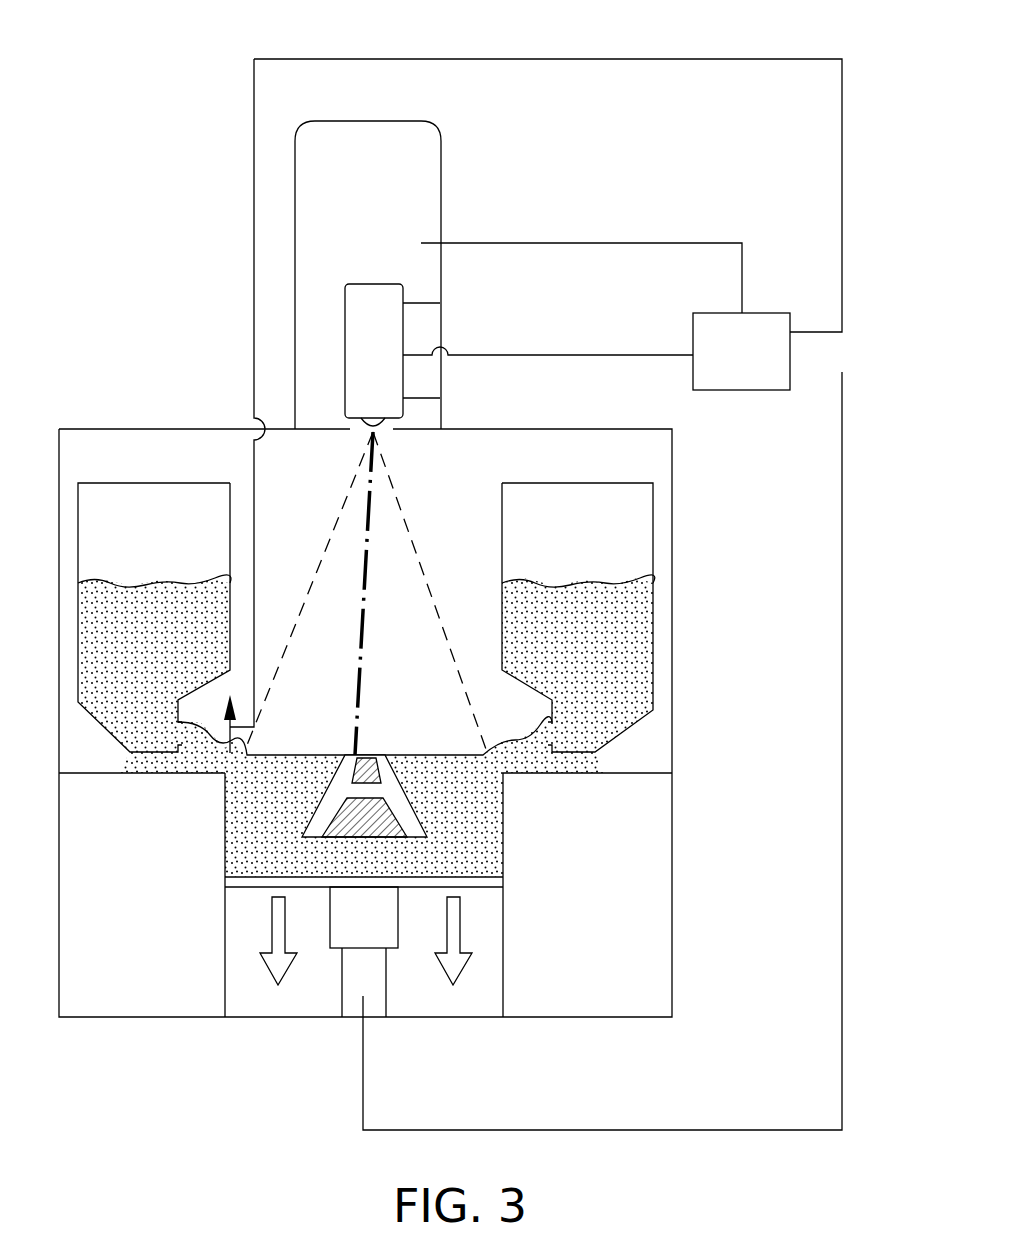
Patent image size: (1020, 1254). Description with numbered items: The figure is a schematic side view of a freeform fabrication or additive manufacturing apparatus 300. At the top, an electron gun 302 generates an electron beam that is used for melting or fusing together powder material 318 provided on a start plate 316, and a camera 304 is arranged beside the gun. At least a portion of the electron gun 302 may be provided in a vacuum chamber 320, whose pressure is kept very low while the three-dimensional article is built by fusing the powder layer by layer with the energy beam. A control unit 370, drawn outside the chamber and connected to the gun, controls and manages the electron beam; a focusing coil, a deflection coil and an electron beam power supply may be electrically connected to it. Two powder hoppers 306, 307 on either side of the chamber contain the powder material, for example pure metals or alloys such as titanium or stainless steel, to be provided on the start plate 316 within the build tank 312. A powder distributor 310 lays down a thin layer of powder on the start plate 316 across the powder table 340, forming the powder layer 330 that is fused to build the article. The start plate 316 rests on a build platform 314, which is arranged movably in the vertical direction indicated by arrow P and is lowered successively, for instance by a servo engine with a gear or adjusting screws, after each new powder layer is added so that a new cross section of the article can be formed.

The additive manufacturing apparatus 300 is at (150, 52).
The electron gun 302 is at (340, 210).
The camera 304 is at (358, 346).
The powder hopper 306 is at (152, 620).
The powder hopper 307 is at (627, 652).
The powder distributor 310 is at (232, 732).
The build tank 312 is at (222, 945).
The build platform 314 is at (315, 882).
The start plate 316 is at (408, 846).
The powder material 318 is at (463, 793).
The vacuum chamber 320 is at (672, 960).
The powder layer 330 is at (337, 793).
The powder table 340 is at (652, 775).
The control unit 370 is at (596, 316).